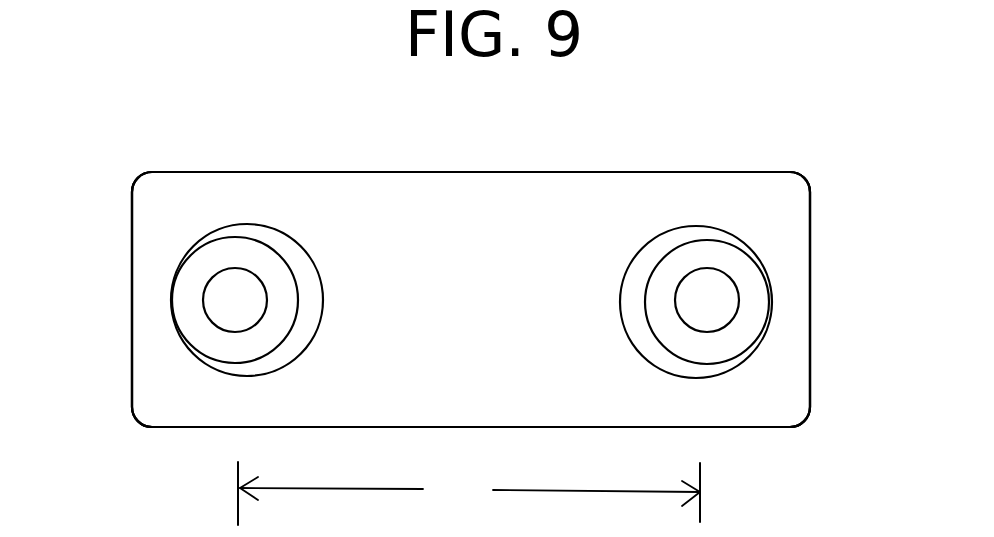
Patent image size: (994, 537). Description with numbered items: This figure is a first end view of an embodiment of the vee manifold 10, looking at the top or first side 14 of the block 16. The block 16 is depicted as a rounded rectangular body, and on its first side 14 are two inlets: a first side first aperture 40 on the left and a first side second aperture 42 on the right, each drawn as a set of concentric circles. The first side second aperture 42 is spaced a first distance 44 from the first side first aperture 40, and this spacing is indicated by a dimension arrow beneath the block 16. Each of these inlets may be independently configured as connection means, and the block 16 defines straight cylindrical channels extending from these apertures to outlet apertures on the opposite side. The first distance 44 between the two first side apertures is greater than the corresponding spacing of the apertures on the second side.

The vee manifold 10 is at (98, 130).
The first side 14 is at (482, 302).
The block 16 is at (812, 368).
The first side first aperture 40 is at (238, 293).
The first side second aperture 42 is at (710, 293).
The first distance 44 is at (469, 493).